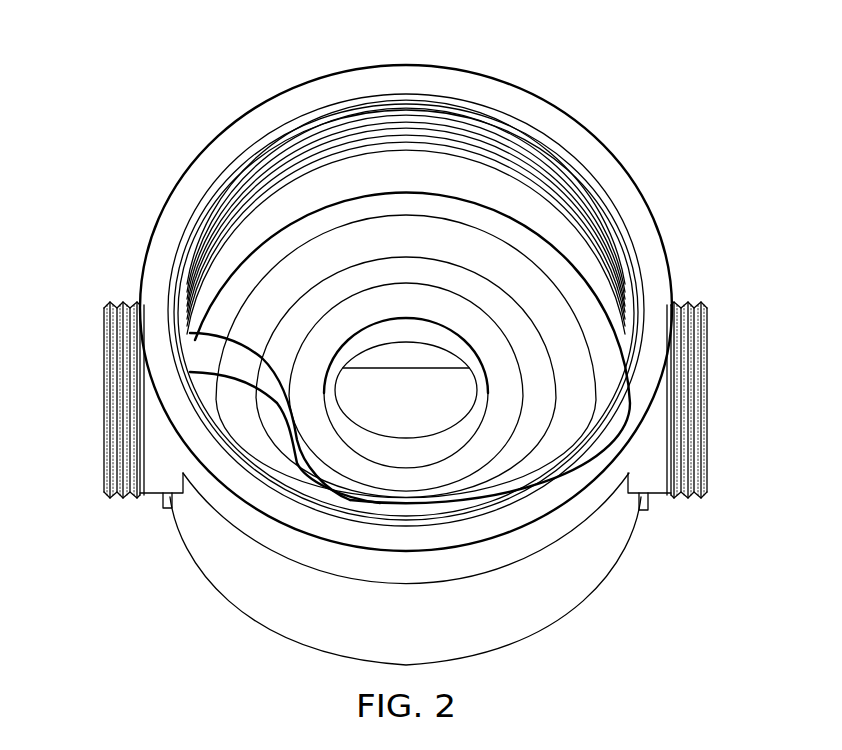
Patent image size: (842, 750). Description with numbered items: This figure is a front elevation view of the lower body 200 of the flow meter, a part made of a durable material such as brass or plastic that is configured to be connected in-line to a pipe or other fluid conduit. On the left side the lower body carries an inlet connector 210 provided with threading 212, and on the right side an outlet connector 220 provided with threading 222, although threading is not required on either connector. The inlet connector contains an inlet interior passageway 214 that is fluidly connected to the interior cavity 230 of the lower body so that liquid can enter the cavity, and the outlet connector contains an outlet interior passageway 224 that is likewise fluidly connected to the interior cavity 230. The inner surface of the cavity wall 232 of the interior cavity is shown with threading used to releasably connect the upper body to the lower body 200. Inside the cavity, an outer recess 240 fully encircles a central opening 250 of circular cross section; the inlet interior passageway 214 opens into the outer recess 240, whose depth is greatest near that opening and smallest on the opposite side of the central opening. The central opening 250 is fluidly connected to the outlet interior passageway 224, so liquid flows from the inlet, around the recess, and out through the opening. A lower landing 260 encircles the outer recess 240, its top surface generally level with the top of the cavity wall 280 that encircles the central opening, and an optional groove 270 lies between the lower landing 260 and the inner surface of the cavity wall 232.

The lower body 200 is at (692, 152).
The inlet connector 210 is at (119, 502).
The threading 212 is at (105, 307).
The inlet interior passageway 214 is at (90, 405).
The outlet connector 220 is at (692, 502).
The threading 222 is at (706, 307).
The outlet interior passageway 224 is at (721, 405).
The interior cavity 230 is at (462, 112).
The cavity wall 232 is at (347, 110).
The outer recess 240 is at (340, 247).
The central opening 250 is at (365, 430).
The lower landing 260 is at (535, 245).
The groove 270 is at (277, 207).
The cavity wall 280 is at (450, 312).